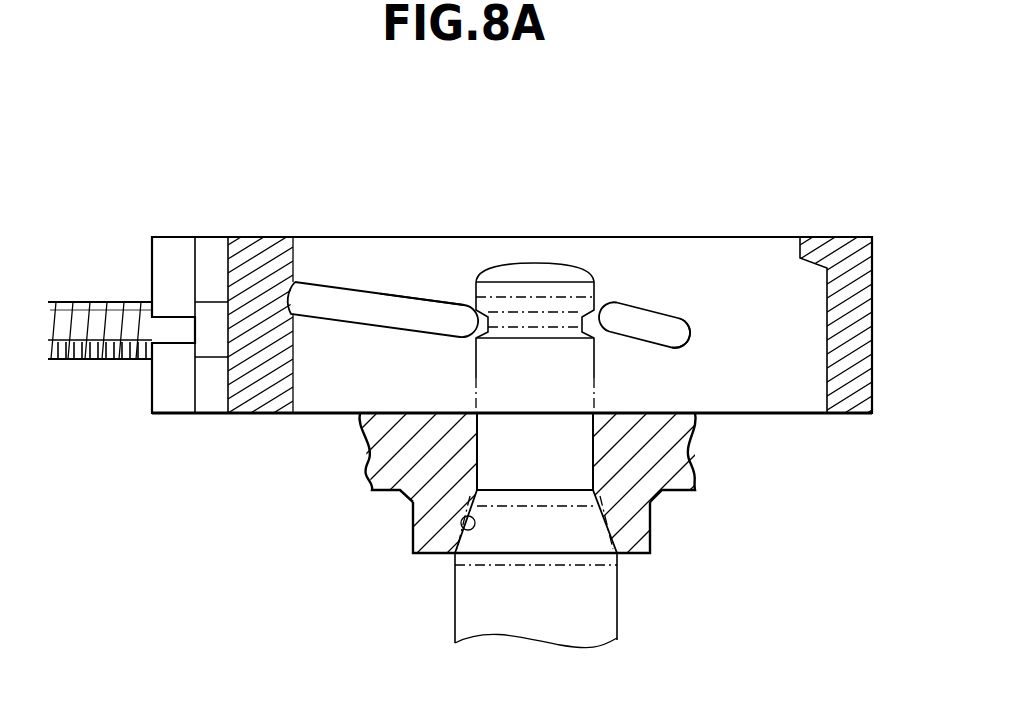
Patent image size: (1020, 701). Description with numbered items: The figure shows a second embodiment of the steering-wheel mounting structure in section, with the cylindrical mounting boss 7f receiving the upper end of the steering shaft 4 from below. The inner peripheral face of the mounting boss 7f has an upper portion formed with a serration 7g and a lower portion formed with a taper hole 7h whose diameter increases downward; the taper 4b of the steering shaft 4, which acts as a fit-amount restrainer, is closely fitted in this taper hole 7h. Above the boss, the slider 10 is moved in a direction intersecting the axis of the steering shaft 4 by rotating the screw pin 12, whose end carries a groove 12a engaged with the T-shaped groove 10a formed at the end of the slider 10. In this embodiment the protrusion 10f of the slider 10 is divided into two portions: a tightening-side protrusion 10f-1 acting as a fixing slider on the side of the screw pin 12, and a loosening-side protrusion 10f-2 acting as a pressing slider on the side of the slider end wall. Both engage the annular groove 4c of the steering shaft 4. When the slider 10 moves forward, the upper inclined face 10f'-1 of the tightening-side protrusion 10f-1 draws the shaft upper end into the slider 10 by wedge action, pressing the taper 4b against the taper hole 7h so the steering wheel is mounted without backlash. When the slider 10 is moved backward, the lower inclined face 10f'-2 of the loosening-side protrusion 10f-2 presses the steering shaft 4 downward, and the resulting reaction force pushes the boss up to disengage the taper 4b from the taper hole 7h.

The slider 10 is at (310, 413).
The T-shaped groove 10a is at (212, 262).
The protrusion 10f is at (545, 224).
The tightening-side protrusion 10f-1 is at (387, 308).
The loosening-side protrusion 10f-2 is at (632, 303).
The upper inclined face 10f'-1 is at (470, 248).
The lower inclined face 10f'-2 is at (737, 268).
The screw pin 12 is at (95, 362).
The groove 12a is at (178, 330).
The steering shaft 4 is at (613, 590).
The taper 4b is at (497, 540).
The annular groove 4c is at (588, 306).
The serration 7g is at (587, 449).
The mounting boss 7f is at (652, 527).
The taper hole 7h is at (470, 533).